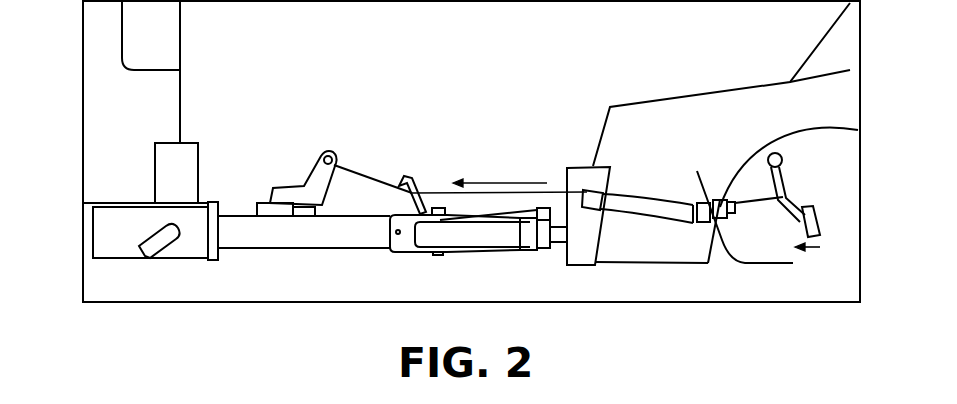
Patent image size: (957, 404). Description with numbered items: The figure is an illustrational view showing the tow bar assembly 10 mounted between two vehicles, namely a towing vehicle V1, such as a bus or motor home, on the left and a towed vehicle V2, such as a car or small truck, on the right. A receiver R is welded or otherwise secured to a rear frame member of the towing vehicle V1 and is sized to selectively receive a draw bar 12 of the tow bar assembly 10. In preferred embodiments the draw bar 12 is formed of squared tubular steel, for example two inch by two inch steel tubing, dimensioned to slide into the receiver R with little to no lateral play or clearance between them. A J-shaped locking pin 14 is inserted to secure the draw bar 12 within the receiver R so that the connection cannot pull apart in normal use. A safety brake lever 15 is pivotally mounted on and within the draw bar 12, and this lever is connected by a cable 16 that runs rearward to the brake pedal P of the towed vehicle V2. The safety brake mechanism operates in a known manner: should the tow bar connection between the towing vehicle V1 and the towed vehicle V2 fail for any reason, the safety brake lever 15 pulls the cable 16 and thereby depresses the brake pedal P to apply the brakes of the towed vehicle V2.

The towing vehicle V1 is at (155, 98).
The towed vehicle V2 is at (738, 83).
The brake pedal P is at (790, 207).
The receiver R is at (167, 257).
The tow bar assembly 10 is at (437, 198).
The draw bar 12 is at (358, 248).
The J-shaped locking pin 14 is at (147, 240).
The safety brake lever 15 is at (310, 180).
The cable 16 is at (357, 173).